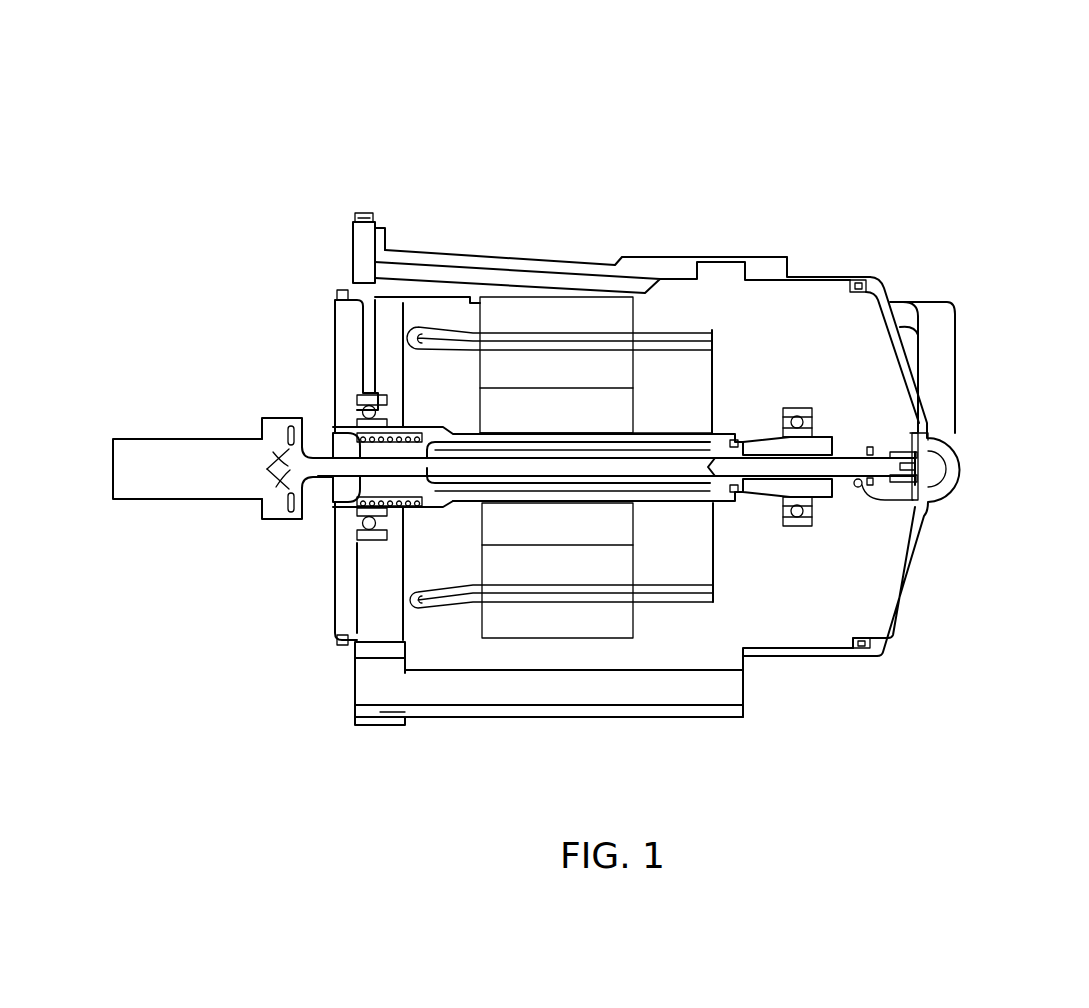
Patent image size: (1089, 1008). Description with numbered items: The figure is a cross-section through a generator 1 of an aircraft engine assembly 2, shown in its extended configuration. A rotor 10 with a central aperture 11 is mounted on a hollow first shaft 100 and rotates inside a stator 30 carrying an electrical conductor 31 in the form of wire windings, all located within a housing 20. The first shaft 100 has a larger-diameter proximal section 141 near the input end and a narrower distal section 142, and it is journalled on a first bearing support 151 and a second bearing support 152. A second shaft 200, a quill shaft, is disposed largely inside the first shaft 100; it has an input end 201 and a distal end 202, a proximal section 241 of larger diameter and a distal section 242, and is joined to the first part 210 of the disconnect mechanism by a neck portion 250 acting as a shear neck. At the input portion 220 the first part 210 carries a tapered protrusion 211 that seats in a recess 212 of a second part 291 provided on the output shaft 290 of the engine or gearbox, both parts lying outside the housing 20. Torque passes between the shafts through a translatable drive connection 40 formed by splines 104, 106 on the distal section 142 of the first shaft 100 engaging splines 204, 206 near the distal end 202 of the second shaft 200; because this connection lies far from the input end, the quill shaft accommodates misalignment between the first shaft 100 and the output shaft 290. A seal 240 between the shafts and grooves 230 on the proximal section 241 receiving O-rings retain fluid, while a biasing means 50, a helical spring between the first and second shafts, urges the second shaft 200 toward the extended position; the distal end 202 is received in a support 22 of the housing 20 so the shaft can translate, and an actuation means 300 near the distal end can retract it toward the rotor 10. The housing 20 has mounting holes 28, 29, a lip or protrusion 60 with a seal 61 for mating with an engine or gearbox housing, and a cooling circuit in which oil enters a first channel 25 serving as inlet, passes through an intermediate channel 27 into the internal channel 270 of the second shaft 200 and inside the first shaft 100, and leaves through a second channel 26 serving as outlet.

The generator 1 is at (960, 694).
The aircraft engine assembly 2 is at (108, 104).
The rotor 10 is at (610, 313).
The central aperture 11 is at (503, 430).
The housing 20 is at (910, 578).
The support 22 is at (869, 447).
The first channel 25 is at (362, 250).
The second channel 26 is at (365, 700).
The intermediate channel 27 is at (945, 343).
The mounting hole 28 is at (401, 722).
The mounting hole 29 is at (366, 213).
The stator 30 is at (617, 297).
The electrical conductor 31 is at (452, 330).
The translatable drive connection 40 is at (757, 512).
The biasing means 50 is at (385, 437).
The lip or protrusion 60 is at (334, 306).
The seal 61 is at (344, 290).
The first shaft 100 is at (720, 432).
The spline 104 is at (810, 417).
The spline 106 is at (740, 500).
The proximal section 141 is at (370, 527).
The distal section 142 is at (613, 495).
The first bearing support 151 is at (348, 428).
The second bearing support 152 is at (815, 413).
The second shaft 200 is at (647, 457).
The input end 201 is at (265, 468).
The distal end 202 is at (915, 440).
The spline 204 is at (867, 450).
The spline 206 is at (805, 484).
The first part of disconnect mechanism 210 is at (295, 418).
The tapered protrusion 211 is at (286, 472).
The recess 212 is at (289, 478).
The input portion 220 is at (303, 527).
The annular recess or groove 230 is at (893, 452).
The seal 240 is at (363, 430).
The proximal section 241 is at (405, 505).
The distal section 242 is at (540, 470).
The neck portion 250 is at (300, 481).
The internal channel or bore 270 is at (916, 462).
The output shaft 290 is at (120, 500).
The second part of disconnect mechanism 291 is at (287, 450).
The actuation means 300 is at (913, 500).